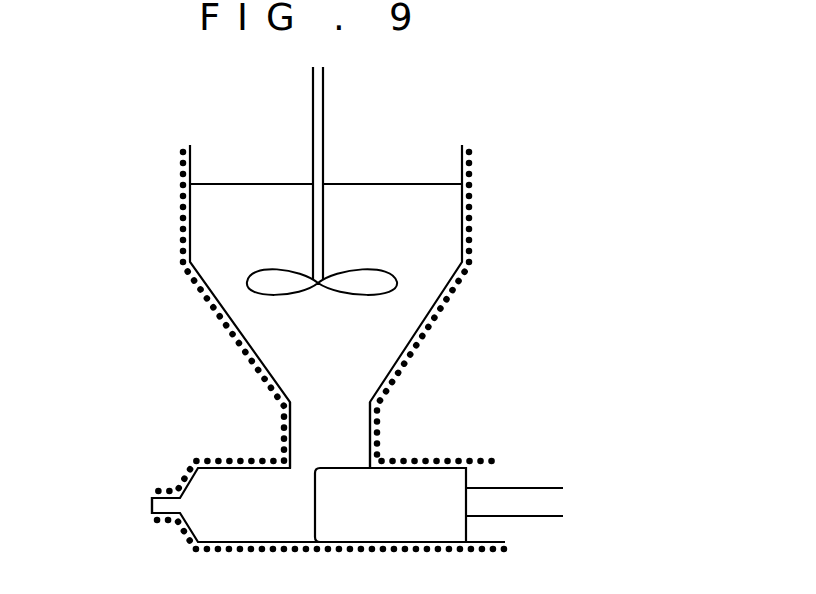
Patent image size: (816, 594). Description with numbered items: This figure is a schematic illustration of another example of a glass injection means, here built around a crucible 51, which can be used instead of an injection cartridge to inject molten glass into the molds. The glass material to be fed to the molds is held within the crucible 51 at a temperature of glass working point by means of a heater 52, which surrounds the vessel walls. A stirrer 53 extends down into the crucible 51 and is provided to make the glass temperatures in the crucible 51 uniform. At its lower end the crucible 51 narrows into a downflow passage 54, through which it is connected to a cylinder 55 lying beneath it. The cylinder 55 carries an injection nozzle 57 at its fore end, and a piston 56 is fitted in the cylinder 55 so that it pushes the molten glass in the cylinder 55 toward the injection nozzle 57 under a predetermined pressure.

The crucible 51 is at (462, 161).
The heater 52 is at (438, 312).
The stirrer 53 is at (313, 99).
The downflow passage 54 is at (325, 447).
The cylinder 55 is at (243, 492).
The piston 56 is at (407, 512).
The injection nozzle 57 is at (162, 507).